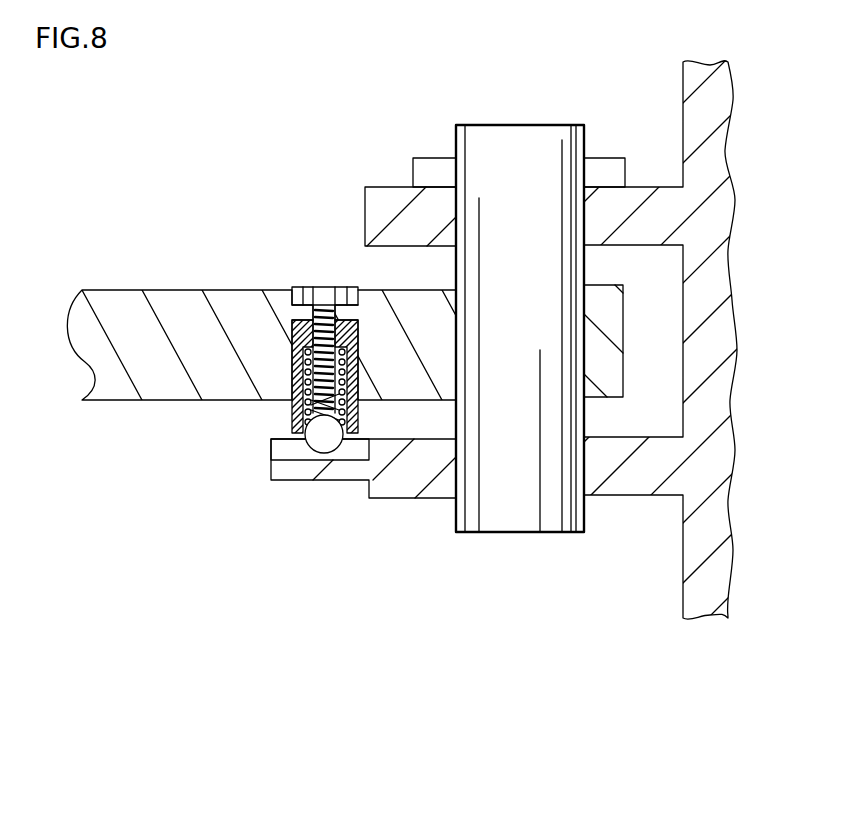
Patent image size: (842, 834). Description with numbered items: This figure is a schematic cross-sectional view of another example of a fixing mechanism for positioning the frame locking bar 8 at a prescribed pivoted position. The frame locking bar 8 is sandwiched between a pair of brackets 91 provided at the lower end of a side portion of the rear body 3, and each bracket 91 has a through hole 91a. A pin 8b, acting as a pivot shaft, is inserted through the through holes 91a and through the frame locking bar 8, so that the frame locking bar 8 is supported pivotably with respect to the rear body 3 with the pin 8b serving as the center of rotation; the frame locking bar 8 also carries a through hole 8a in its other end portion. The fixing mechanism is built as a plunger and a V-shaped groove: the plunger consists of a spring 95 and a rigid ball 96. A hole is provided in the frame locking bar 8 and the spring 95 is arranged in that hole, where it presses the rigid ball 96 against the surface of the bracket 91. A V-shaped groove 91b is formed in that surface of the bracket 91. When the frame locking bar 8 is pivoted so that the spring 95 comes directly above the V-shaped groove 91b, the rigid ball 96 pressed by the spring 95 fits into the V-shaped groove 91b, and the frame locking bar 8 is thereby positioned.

The rear body 3 is at (703, 120).
The frame locking bar 8 is at (198, 313).
The through hole 8a is at (584, 342).
The pin 8b is at (521, 148).
The bracket 91 is at (390, 206).
The through hole 91a is at (453, 206).
The V-shaped groove 91b is at (350, 450).
The spring 95 is at (305, 368).
The rigid ball 96 is at (320, 440).